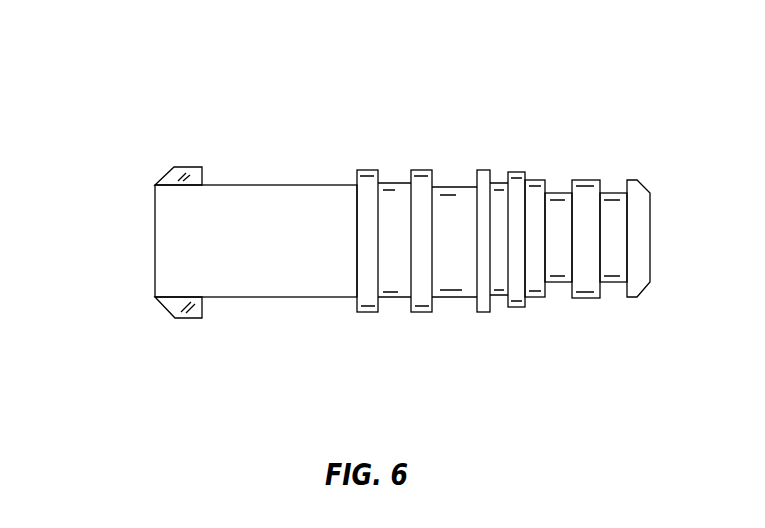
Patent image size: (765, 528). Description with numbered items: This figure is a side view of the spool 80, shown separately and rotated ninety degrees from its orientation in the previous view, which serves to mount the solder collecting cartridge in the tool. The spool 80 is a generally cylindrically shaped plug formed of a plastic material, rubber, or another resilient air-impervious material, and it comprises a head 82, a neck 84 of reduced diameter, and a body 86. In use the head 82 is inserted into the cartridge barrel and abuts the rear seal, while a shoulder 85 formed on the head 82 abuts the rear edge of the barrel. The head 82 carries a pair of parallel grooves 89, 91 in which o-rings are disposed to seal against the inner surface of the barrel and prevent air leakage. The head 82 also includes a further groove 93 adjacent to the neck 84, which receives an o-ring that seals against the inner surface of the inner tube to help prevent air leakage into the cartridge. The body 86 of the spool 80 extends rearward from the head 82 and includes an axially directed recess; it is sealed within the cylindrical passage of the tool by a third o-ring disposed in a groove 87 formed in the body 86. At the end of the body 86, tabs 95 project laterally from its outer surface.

The spool 80 is at (134, 122).
The head 82 is at (588, 170).
The neck 84 is at (452, 174).
The shoulder 85 is at (528, 177).
The body 86 is at (272, 174).
The groove 87 is at (390, 298).
The groove 89 is at (550, 298).
The groove 91 is at (608, 283).
The groove 93 is at (498, 298).
The tabs 95 is at (184, 166).